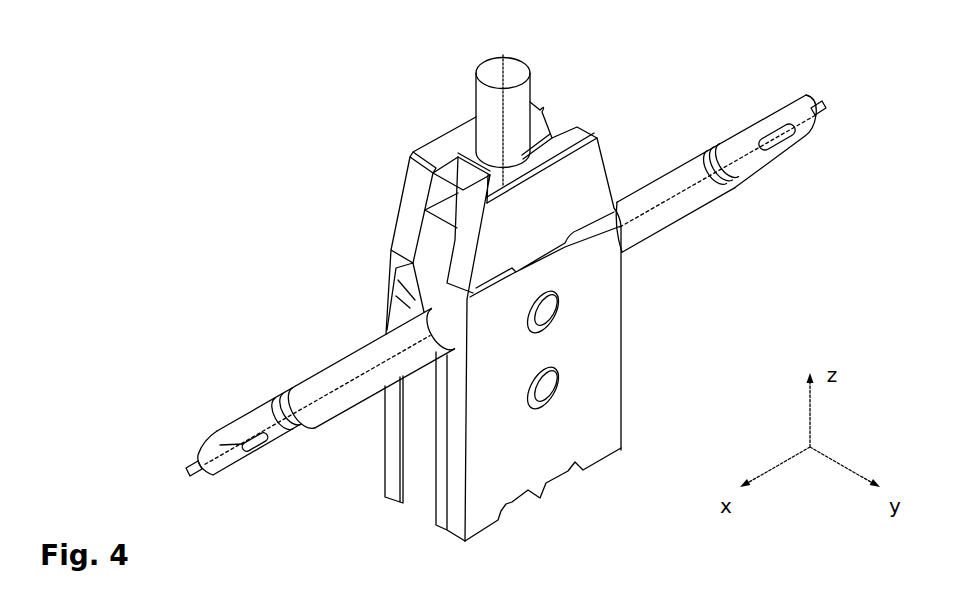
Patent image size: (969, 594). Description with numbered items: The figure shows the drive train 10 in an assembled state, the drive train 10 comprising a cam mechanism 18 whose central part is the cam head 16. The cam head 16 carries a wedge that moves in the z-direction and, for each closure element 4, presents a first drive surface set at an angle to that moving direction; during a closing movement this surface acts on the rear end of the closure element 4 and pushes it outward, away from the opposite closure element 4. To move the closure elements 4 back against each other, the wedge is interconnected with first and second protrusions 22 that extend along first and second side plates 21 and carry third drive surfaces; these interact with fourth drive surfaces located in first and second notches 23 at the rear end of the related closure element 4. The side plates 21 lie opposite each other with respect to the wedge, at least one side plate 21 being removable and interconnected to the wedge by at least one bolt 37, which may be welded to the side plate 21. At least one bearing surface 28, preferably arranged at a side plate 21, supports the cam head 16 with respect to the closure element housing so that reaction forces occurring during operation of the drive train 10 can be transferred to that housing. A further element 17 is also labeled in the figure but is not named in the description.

The closure element 4 is at (268, 360).
The drive train 10 is at (250, 155).
The cam head 16 is at (403, 148).
The holding arms 17 is at (436, 248).
The cam mechanism 18 is at (607, 117).
The side plate 21 is at (370, 430).
The protrusion 22 is at (430, 395).
The notch 23 is at (403, 307).
The bearing surface 28 is at (628, 333).
The bolt 37 is at (560, 308).